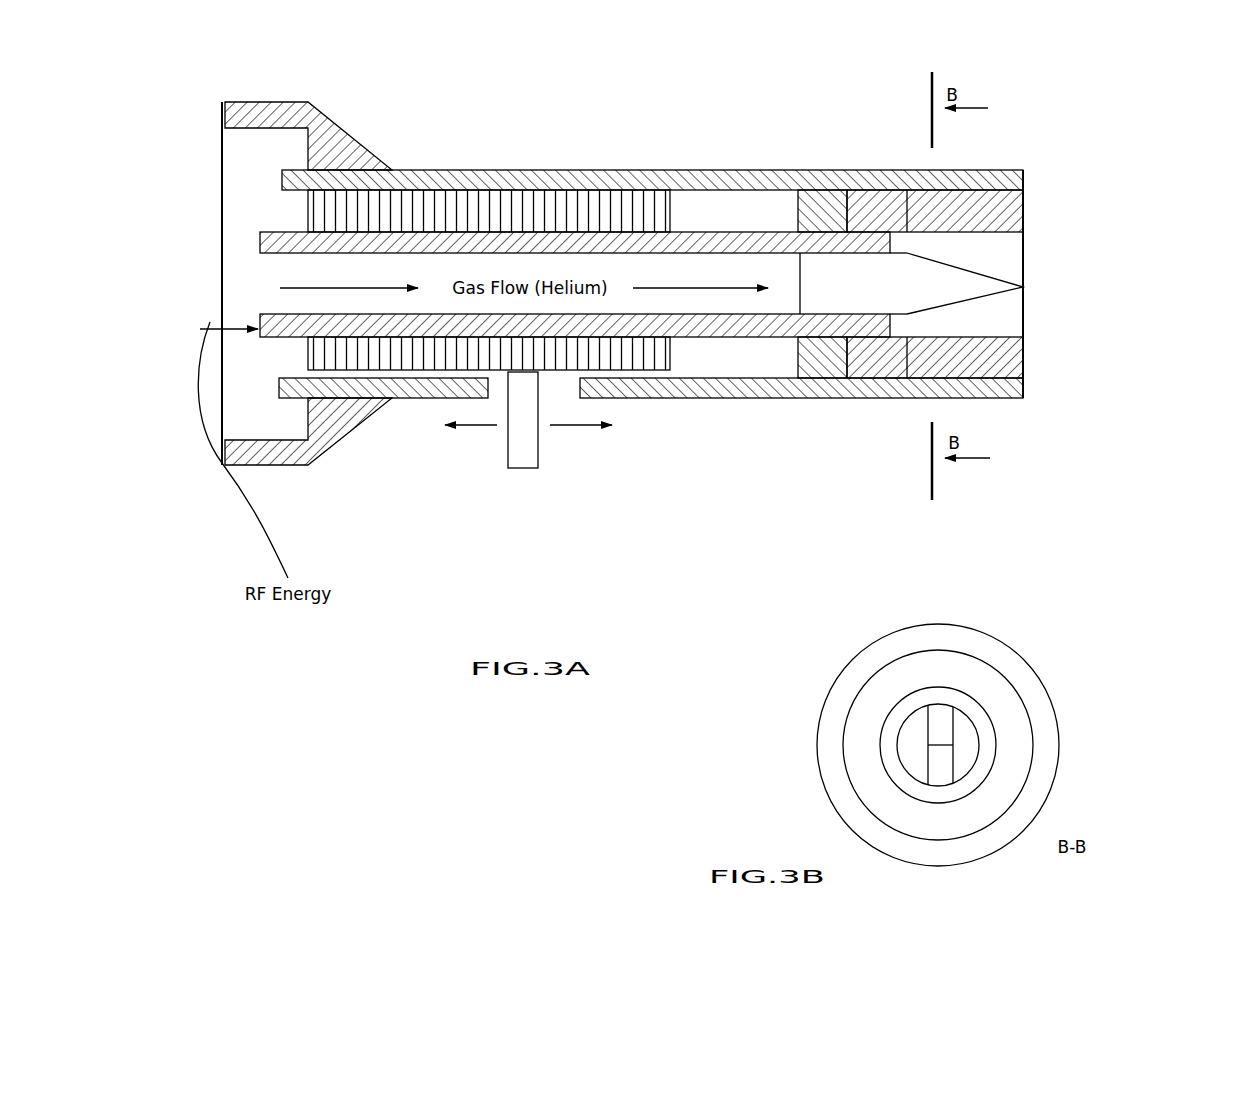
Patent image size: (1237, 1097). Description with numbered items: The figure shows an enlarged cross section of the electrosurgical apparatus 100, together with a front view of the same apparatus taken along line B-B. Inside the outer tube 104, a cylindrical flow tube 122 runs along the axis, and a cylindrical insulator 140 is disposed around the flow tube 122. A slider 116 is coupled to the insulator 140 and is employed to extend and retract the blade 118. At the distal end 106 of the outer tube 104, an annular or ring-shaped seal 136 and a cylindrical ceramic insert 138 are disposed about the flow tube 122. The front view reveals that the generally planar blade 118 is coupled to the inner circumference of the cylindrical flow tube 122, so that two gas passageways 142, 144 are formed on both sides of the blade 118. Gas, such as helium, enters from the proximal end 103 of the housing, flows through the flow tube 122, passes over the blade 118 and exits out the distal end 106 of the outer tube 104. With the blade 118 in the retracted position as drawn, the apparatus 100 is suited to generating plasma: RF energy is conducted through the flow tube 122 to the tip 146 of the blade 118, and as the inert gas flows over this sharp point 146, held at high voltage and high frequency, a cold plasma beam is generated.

In FIG. 3A, the apparatus 100 is at (1070, 198).
In FIG. 3A, the proximal end 103 is at (285, 102).
In FIG. 3A, the outer tube 104 is at (455, 177).
In FIG. 3B, the outer tube 104 is at (960, 642).
In FIG. 3A, the distal end 106 is at (1007, 166).
In FIG. 3A, the slider 116 is at (523, 453).
In FIG. 3A, the blade 118 is at (925, 293).
In FIG. 3B, the blade 118 is at (957, 782).
In FIG. 3A, the flow tube 122 is at (413, 328).
In FIG. 3B, the flow tube 122 is at (987, 745).
In FIG. 3A, the seal 136 is at (690, 508).
In FIG. 3A, the ceramic insert 138 is at (802, 508).
In FIG. 3B, the ceramic insert 138 is at (995, 697).
In FIG. 3A, the insulator 140 is at (632, 492).
In FIG. 3B, the gas passageway 142 is at (912, 745).
In FIG. 3B, the gas passageway 144 is at (965, 737).
In FIG. 3A, the tip 146 is at (1022, 287).